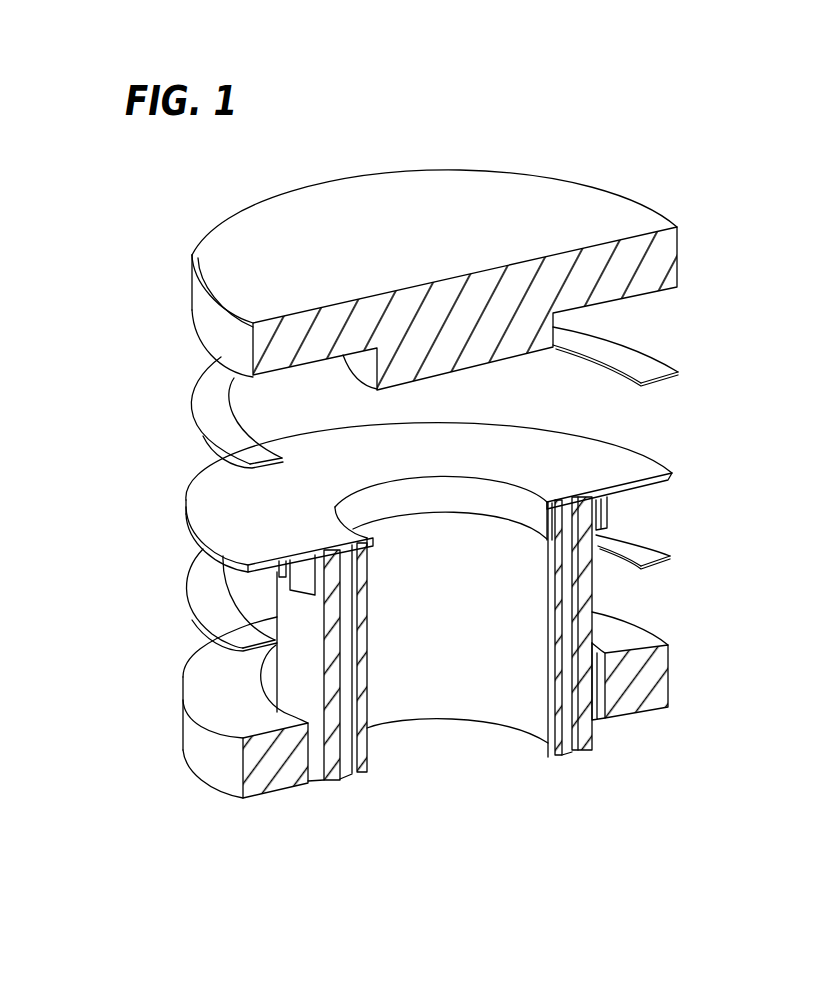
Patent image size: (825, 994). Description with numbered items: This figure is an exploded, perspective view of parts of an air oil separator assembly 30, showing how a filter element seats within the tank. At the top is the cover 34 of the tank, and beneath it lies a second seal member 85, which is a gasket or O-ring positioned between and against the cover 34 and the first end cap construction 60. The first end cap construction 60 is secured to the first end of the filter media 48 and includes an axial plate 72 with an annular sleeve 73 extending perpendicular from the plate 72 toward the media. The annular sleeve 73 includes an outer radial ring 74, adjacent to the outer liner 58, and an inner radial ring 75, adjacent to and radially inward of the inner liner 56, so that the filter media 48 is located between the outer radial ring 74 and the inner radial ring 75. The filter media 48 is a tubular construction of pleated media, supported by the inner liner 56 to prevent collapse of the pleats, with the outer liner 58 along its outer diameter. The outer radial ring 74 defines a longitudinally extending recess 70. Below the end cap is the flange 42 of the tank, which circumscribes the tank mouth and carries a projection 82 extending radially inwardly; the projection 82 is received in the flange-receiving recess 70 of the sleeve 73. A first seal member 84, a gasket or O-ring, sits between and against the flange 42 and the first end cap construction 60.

The air oil separator assembly 30 is at (618, 160).
The cover 34 is at (377, 198).
The second seal member 85 is at (647, 367).
The recess 70 is at (422, 542).
The axial plate 72 is at (207, 502).
The first end cap construction 60 is at (522, 464).
The inner radial ring 75 is at (470, 507).
The annular sleeve 73 is at (283, 574).
The outer radial ring 74 is at (607, 513).
The first seal member 84 is at (660, 563).
The outer liner 58 is at (312, 768).
The inner liner 56 is at (467, 684).
The filter media 48 is at (563, 717).
The flange 42 is at (385, 712).
The projection 82 is at (303, 713).